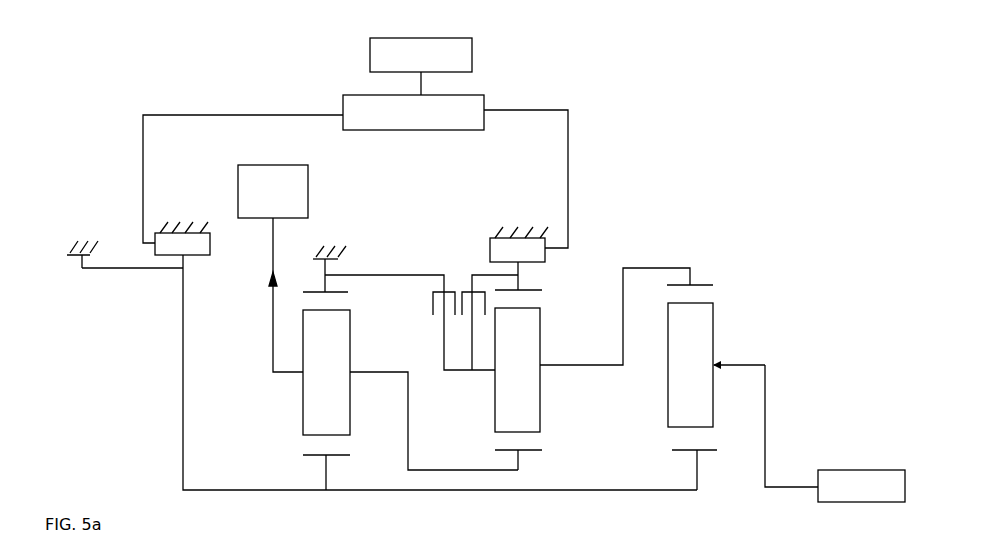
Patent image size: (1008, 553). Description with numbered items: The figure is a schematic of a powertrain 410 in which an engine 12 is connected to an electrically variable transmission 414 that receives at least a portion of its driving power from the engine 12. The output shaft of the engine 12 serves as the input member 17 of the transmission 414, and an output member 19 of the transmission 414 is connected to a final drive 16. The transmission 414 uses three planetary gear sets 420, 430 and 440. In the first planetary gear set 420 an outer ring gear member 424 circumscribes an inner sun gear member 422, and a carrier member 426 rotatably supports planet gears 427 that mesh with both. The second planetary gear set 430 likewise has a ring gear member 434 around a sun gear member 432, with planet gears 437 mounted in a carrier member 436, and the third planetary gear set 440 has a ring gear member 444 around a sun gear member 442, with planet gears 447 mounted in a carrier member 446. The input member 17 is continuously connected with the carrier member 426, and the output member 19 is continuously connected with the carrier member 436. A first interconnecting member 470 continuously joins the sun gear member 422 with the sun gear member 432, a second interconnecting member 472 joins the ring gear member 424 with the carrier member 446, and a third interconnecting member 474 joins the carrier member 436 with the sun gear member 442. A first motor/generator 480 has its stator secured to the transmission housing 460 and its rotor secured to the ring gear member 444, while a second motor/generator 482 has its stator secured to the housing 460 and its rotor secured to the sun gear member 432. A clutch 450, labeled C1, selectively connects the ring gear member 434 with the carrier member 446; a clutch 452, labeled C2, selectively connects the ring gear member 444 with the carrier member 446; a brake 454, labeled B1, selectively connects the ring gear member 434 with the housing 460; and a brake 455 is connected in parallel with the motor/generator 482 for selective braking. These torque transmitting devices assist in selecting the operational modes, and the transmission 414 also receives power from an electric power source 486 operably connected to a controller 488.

The powertrain 410 is at (97, 80).
The electrically variable transmission 414 is at (97, 135).
The engine 12 is at (840, 468).
The final drive 16 is at (282, 165).
The input member 17 is at (790, 489).
The output member 19 is at (272, 243).
The planetary gear set 420 is at (690, 455).
The sun gear member 422 is at (705, 452).
The ring gear member 424 is at (700, 283).
The carrier member 426 is at (723, 355).
The planet gears 427 is at (690, 365).
The planetary gear set 430 is at (323, 460).
The sun gear member 432 is at (345, 457).
The ring gear member 434 is at (310, 292).
The carrier member 436 is at (298, 378).
The planet gears 437 is at (326, 372).
The planetary gear set 440 is at (512, 455).
The sun gear member 442 is at (530, 452).
The ring gear member 444 is at (545, 292).
The carrier member 446 is at (548, 373).
The planet gears 447 is at (517, 370).
The clutch 450 is at (437, 317).
The clutch 452 is at (463, 319).
The brake 454 is at (338, 258).
The brake 455 is at (63, 259).
The transmission housing 460 is at (84, 242).
The first interconnecting member 470 is at (595, 490).
The second interconnecting member 472 is at (582, 365).
The third interconnecting member 474 is at (440, 470).
The first motor/generator 480 is at (484, 244).
The second motor/generator 482 is at (212, 247).
The electric power source 486 is at (472, 54).
The controller 488 is at (484, 102).
The brake B1 is at (365, 265).
The first clutch C1 is at (413, 298).
The second clutch C2 is at (465, 268).